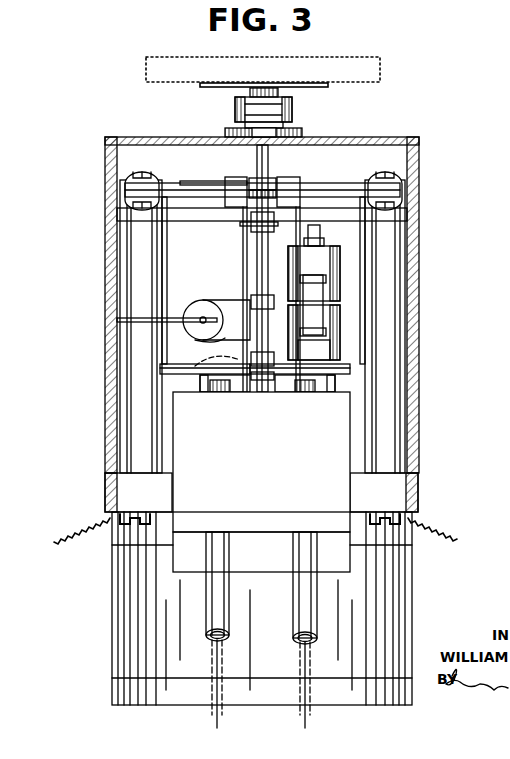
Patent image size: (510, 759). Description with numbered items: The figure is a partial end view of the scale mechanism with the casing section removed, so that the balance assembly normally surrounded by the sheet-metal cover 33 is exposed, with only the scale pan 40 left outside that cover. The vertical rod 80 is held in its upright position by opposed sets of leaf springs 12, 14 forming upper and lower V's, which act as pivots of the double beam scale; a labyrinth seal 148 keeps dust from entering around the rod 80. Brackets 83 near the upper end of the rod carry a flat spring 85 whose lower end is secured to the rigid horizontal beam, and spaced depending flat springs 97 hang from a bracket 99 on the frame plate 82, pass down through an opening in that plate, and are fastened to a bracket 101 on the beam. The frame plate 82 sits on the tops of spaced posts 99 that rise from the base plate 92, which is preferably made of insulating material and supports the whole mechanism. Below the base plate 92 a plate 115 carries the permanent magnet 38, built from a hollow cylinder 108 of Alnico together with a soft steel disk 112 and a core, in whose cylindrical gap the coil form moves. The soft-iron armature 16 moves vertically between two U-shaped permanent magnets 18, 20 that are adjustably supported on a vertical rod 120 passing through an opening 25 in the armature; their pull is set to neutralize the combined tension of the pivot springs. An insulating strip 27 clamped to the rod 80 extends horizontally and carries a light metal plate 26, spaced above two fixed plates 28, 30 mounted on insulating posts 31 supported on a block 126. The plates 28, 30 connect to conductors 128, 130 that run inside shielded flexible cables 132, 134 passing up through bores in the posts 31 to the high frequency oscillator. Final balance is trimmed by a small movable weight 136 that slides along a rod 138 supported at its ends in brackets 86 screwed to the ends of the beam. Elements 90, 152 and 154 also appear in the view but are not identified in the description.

The leaf spring 12 is at (175, 185).
The leaf spring 14 is at (190, 198).
The armature 16 is at (328, 330).
The permanent magnet 18 is at (330, 268).
The permanent magnet 20 is at (315, 352).
The opening 25 is at (326, 296).
The light metal plate 26 is at (200, 370).
The strip of insulating material 27 is at (272, 392).
The fixed plate 28 is at (210, 392).
The fixed plate 30 is at (320, 392).
The post 31 is at (205, 395).
The cover 33 is at (418, 160).
The permanent magnet 38 is at (48, 605).
The scale pan 40 is at (328, 87).
The vertical rod 80 is at (257, 165).
The frame plate 82 is at (130, 214).
The bracket 83 is at (135, 192).
The flat spring 85 is at (250, 235).
The bracket 86 is at (210, 343).
The cylinders 90 is at (140, 343).
The base plate 92 is at (105, 492).
The flat spring 97 is at (292, 195).
The post 99 is at (235, 187).
The bracket 101 is at (212, 360).
The hollow cylinder 108 is at (130, 650).
The soft steel disk 112 is at (128, 688).
The plate 115 is at (120, 516).
The vertical rod 120 is at (322, 240).
The block 126 is at (320, 506).
The conductor 128 is at (213, 722).
The conductor 130 is at (308, 722).
The shielded flexible cable 132 is at (228, 598).
The shielded flexible cable 134 is at (298, 612).
The movable weight 136 is at (195, 310).
The rod 138 is at (140, 322).
The labyrinth seal 148 is at (209, 107).
The left spring 152 is at (90, 552).
The right spring 154 is at (438, 552).